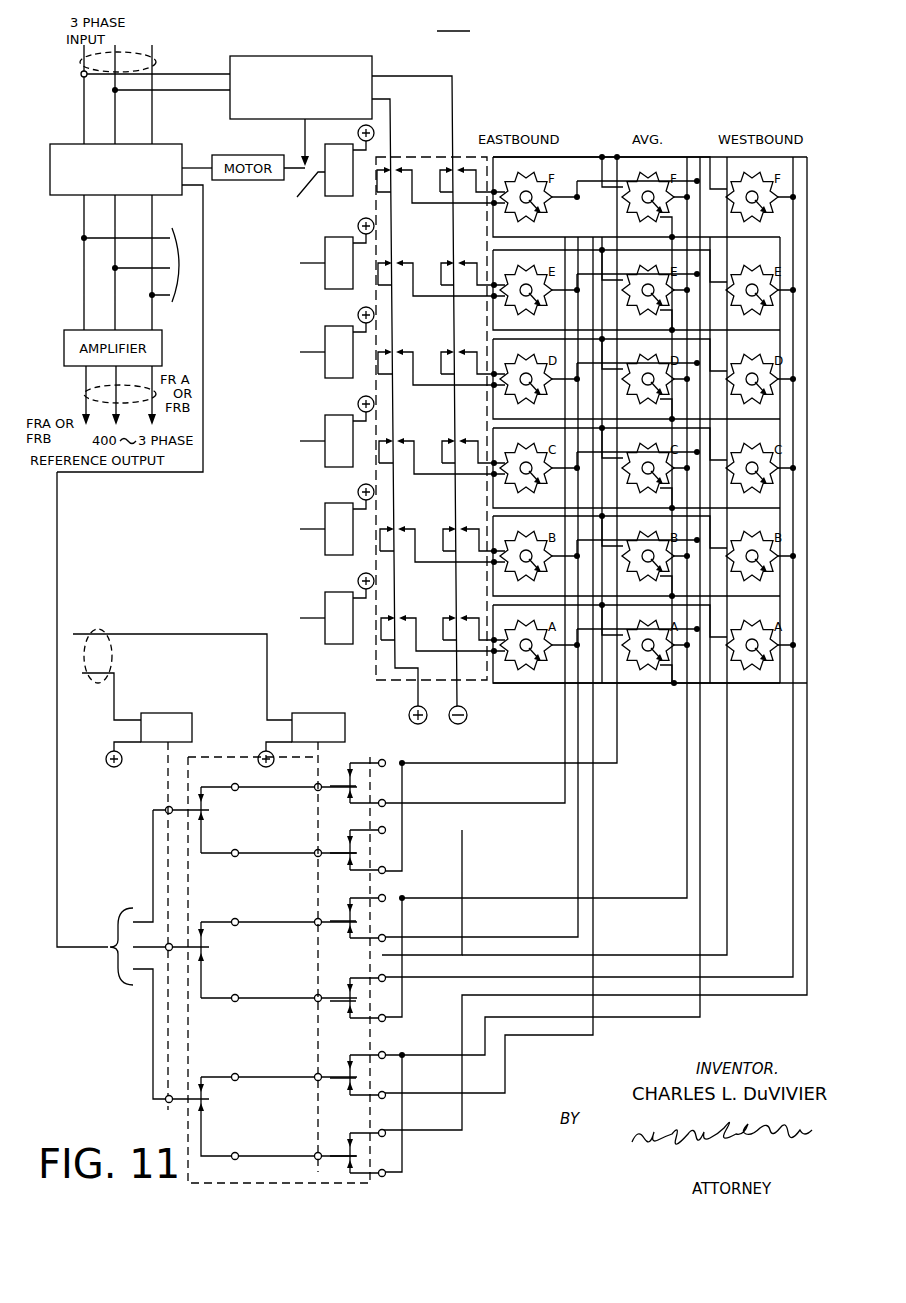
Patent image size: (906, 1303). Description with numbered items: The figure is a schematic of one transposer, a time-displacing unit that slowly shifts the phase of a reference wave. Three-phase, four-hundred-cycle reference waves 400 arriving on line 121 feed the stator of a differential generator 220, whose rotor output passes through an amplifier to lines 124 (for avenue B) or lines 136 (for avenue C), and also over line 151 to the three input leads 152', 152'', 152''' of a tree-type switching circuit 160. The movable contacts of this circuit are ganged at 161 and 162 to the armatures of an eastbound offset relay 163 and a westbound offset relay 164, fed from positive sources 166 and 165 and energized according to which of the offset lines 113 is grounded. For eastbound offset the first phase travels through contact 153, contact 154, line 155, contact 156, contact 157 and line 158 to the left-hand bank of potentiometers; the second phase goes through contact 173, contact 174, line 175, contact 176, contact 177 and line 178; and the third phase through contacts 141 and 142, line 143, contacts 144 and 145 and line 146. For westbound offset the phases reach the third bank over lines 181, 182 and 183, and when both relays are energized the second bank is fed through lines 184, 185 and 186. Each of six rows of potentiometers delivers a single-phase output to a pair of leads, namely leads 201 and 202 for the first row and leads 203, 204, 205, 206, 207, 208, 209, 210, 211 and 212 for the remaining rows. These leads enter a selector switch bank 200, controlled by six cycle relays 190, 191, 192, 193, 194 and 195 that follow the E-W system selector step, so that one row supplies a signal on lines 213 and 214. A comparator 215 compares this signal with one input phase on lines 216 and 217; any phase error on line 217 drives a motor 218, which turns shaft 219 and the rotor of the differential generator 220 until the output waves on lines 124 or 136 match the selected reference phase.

The 400-cycle reference waves 400 is at (76, 22).
The line 121 is at (160, 56).
The line 216 is at (205, 64).
The line 217 is at (217, 83).
The comparator 215 is at (332, 56).
The selector switch bank 200 is at (453, 21).
The differential generator 220 is at (45, 149).
The shaft 219 is at (191, 166).
The motor 218 is at (217, 180).
The line 151 is at (58, 551).
The lines 124 is at (80, 392).
The lines 136 is at (40, 408).
The line 213 is at (463, 81).
The line 214 is at (393, 133).
The relay 190 is at (319, 197).
The relay 191 is at (318, 291).
The relay 192 is at (318, 382).
The relay 193 is at (318, 470).
The relay 194 is at (318, 560).
The relay 195 is at (318, 648).
The lead 201 is at (462, 162).
The lead 202 is at (410, 183).
The lead 203 is at (470, 258).
The lead 204 is at (467, 292).
The lead 205 is at (470, 346).
The lead 206 is at (467, 380).
The lead 207 is at (470, 435).
The lead 208 is at (467, 469).
The lead 209 is at (470, 525).
The lead 210 is at (467, 561).
The lead 211 is at (481, 620).
The lead 212 is at (467, 649).
The line 184 is at (617, 739).
The line 158 is at (458, 806).
The line 185 is at (688, 882).
The line 186 is at (702, 846).
The line 181 is at (725, 817).
The line 182 is at (791, 887).
The line 183 is at (804, 918).
The line 178 is at (475, 937).
The line 146 is at (481, 1099).
The contact 157 is at (388, 795).
The contact 156 is at (332, 776).
The contact 176 is at (327, 909).
The contact 177 is at (351, 933).
The contact 144 is at (337, 1062).
The contact 145 is at (346, 1089).
The contact 154 is at (215, 789).
The line 155 is at (284, 788).
The contact 153 is at (179, 794).
The input lead 152' is at (157, 865).
The ganging 161 is at (155, 870).
The line 175 is at (263, 922).
The ganging 162 is at (309, 993).
The contact 174 is at (215, 929).
The input lead 152'' is at (163, 939).
The tree-type switching circuit 160 is at (284, 965).
The contact 173 is at (184, 978).
The input lead 152''' is at (132, 1034).
The contact 141 is at (185, 1087).
The contact 142 is at (217, 1071).
The line 143 is at (275, 1073).
The offset lines 113 is at (177, 674).
The eastbound offset relay 163 is at (194, 718).
The westbound offset relay 164 is at (343, 718).
The positive source of power 166 is at (106, 750).
The positive source of power 165 is at (264, 750).